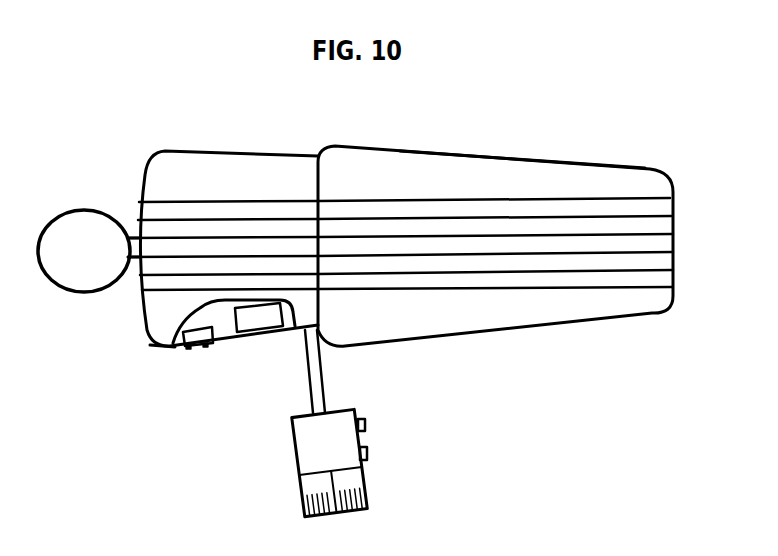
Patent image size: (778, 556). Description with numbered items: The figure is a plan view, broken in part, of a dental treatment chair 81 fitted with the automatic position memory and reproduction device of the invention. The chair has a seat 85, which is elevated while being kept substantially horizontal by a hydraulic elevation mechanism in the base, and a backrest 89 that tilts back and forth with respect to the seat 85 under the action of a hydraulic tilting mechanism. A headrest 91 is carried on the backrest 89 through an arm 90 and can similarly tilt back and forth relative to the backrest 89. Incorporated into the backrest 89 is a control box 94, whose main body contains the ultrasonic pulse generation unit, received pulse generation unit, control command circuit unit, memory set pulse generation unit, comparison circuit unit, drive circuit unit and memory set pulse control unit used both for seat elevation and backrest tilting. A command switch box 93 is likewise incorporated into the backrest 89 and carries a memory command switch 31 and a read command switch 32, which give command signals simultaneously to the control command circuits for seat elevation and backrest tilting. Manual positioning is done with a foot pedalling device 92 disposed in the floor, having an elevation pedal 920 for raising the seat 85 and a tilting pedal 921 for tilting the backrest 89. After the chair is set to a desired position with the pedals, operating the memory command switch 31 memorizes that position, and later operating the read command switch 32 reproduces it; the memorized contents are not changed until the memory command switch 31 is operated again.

The backrest 89 is at (252, 158).
The treatment chair 81 is at (425, 150).
The seat 85 is at (536, 168).
The headrest 91 is at (74, 225).
The arm 90 is at (132, 240).
The command switch box 93 is at (173, 343).
The control box 94 is at (257, 323).
The read command switch 32 is at (205, 348).
The memory command switch 31 is at (188, 350).
The foot pedalling device 92 is at (303, 453).
The tilting pedal 921 is at (366, 426).
The elevation pedal 920 is at (368, 454).